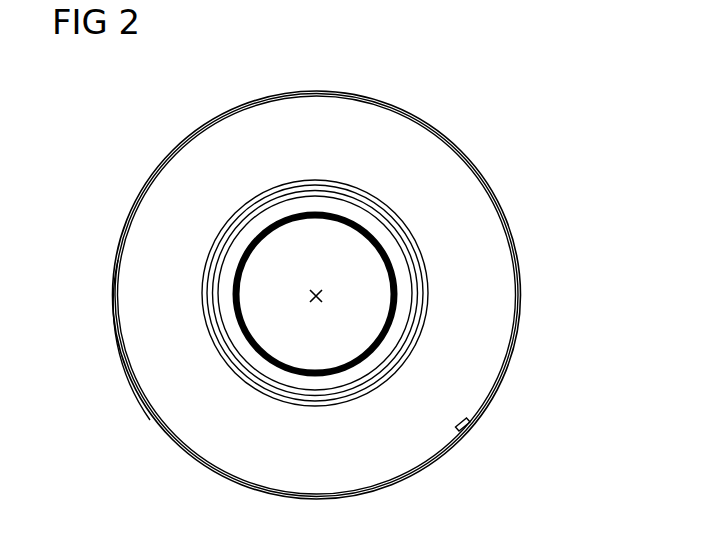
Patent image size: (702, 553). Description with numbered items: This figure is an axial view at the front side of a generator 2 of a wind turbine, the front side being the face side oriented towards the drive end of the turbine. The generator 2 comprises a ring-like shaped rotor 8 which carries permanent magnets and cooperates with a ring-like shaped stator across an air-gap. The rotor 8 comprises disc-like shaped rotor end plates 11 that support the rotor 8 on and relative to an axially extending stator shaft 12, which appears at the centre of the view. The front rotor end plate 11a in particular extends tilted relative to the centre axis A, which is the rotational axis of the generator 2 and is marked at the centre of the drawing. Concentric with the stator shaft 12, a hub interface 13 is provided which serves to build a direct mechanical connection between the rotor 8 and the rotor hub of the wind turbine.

The generator 2 is at (472, 102).
The rotor 8 is at (517, 221).
The rotor end plates 11 is at (141, 400).
The front rotor end plate 11a is at (493, 352).
The stator shaft 12 is at (240, 262).
The hub interface 13 is at (212, 335).
The centre axis A is at (326, 294).